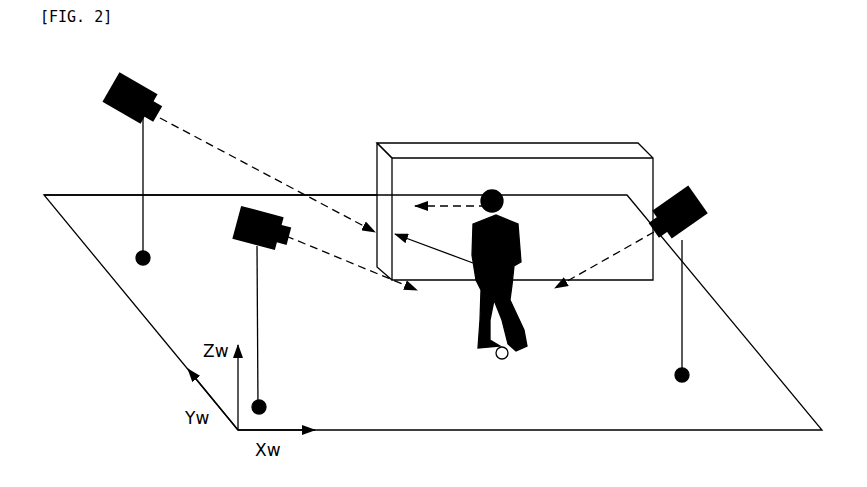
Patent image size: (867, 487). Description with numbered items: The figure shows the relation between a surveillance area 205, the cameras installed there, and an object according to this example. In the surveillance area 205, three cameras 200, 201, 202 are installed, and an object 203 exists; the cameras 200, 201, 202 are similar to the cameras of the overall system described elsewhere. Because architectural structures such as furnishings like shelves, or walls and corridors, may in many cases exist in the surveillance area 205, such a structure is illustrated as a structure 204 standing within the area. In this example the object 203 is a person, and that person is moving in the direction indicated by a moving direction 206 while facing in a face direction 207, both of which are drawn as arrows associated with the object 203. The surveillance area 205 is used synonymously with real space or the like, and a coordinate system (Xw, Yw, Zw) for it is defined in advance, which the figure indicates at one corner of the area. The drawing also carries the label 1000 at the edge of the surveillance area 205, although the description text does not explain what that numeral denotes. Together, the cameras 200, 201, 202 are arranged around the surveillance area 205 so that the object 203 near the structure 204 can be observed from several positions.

The camera 200 is at (148, 80).
The camera 201 is at (237, 218).
The camera 202 is at (702, 205).
The object 203 is at (516, 222).
The structure 204 is at (612, 143).
The surveillance area 205 is at (590, 402).
The moving direction 206 is at (447, 255).
The face direction 207 is at (435, 205).
The surveillance system 1000 is at (95, 135).